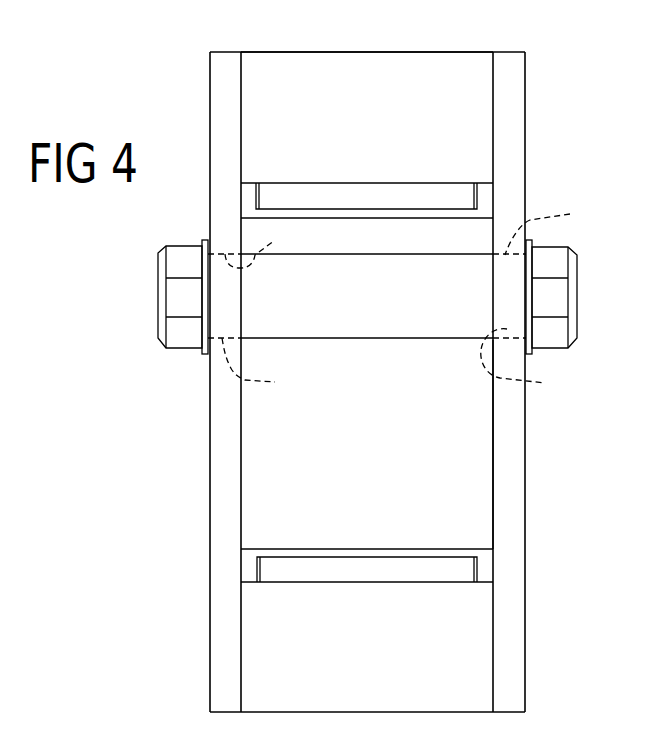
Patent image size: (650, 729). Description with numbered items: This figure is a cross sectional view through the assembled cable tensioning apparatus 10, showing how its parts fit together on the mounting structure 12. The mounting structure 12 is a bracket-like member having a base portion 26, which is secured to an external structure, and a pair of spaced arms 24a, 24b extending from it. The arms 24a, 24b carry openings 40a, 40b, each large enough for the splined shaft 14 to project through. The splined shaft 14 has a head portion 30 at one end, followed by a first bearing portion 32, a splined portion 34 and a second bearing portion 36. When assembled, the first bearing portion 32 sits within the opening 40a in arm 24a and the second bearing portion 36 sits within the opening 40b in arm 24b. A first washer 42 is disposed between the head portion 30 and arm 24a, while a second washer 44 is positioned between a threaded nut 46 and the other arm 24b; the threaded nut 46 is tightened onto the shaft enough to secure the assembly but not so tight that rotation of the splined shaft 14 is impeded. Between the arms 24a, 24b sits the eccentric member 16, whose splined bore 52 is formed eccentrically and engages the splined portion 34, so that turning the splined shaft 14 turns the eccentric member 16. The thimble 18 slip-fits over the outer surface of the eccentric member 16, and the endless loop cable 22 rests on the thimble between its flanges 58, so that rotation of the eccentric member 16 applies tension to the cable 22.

The cable tensioning apparatus 10 is at (112, 87).
The mounting structure 12 is at (304, 589).
The splined shaft 14 is at (371, 319).
The eccentric member 16 is at (463, 433).
The thimble 18 is at (333, 553).
The endless loop cable 22 is at (350, 190).
The arm 24a is at (215, 108).
The arm 24b is at (519, 100).
The base portion 26 is at (275, 72).
The head portion 30 is at (173, 293).
The first bearing portion 32 is at (263, 365).
The splined portion 34 is at (420, 325).
The second bearing portion 36 is at (552, 229).
The opening 40a is at (275, 240).
The opening 40b is at (534, 363).
The first washer 42 is at (205, 243).
The second washer 44 is at (531, 240).
The threaded nut 46 is at (565, 305).
The splined bore 52 is at (442, 256).
The flanges 58 is at (250, 192).